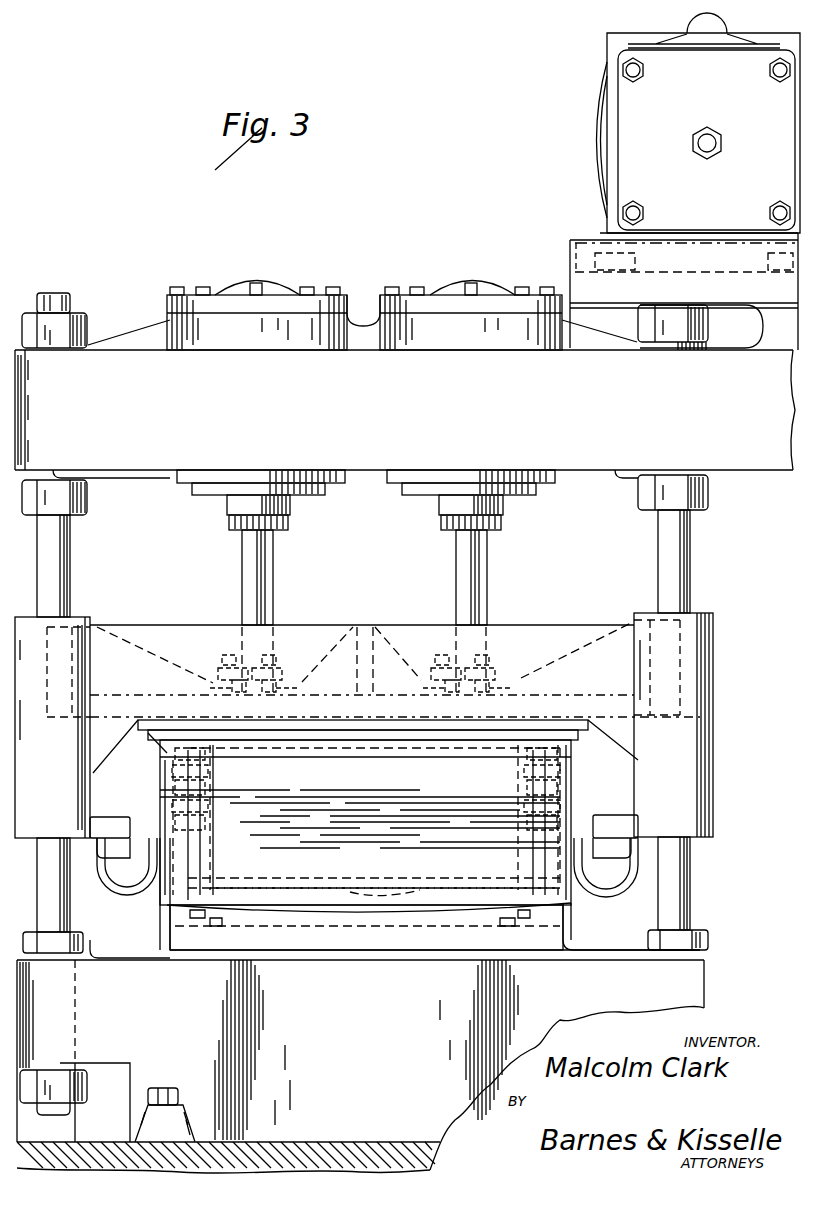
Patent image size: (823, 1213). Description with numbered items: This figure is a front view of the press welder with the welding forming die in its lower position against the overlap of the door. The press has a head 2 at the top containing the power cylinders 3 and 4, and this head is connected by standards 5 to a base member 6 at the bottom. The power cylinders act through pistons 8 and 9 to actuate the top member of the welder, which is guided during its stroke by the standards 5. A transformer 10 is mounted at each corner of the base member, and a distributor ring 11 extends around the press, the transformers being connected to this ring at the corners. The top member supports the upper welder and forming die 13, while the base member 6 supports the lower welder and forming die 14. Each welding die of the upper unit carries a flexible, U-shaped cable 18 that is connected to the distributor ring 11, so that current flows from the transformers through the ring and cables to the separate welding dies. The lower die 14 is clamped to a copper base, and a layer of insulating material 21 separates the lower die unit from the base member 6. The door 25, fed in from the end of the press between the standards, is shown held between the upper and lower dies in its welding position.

The head 2 is at (405, 414).
The power cylinder 3 is at (478, 328).
The power cylinder 4 is at (250, 330).
The standard 5 is at (60, 560).
The base member 6 is at (360, 1066).
The piston 8 is at (480, 572).
The piston 9 is at (267, 573).
The transformer 10 is at (560, 98).
The distributor ring 11 is at (104, 823).
The upper welder and forming die 13 is at (580, 792).
The lower welder and forming die 14 is at (575, 933).
The flexible cable 18 is at (128, 894).
The layer of insulating material 21 is at (315, 955).
The door 25 is at (305, 912).